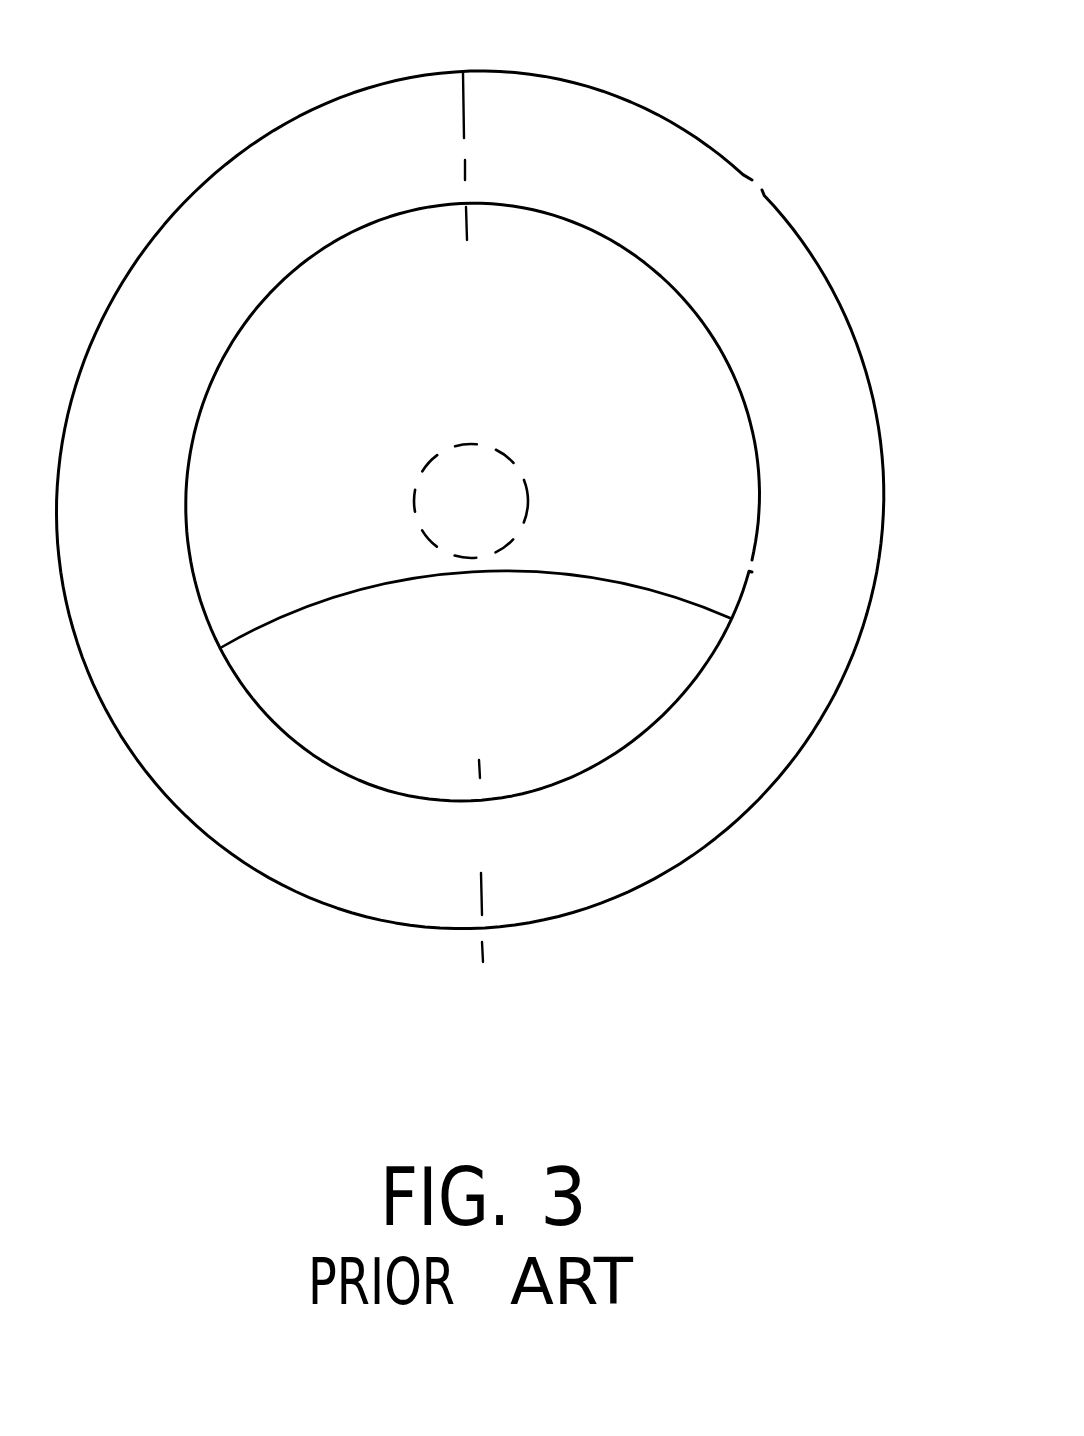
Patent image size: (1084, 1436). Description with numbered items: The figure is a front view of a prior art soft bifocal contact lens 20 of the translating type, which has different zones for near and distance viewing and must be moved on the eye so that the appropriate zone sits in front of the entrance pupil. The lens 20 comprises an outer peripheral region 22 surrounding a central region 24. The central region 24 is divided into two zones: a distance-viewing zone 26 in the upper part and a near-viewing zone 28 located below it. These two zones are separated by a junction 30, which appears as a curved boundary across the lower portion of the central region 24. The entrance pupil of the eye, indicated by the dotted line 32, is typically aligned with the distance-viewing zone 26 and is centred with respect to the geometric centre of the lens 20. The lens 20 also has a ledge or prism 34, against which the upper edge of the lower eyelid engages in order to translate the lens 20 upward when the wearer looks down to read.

The soft bifocal lens 20 is at (752, 118).
The peripheral region 22 is at (808, 412).
The central region 24 is at (567, 320).
The distance-viewing zone 26 is at (462, 380).
The near-viewing zone 28 is at (506, 680).
The junction 30 is at (557, 578).
The entrance pupil of the eye 32 is at (505, 452).
The ledge or prism 34 is at (478, 807).